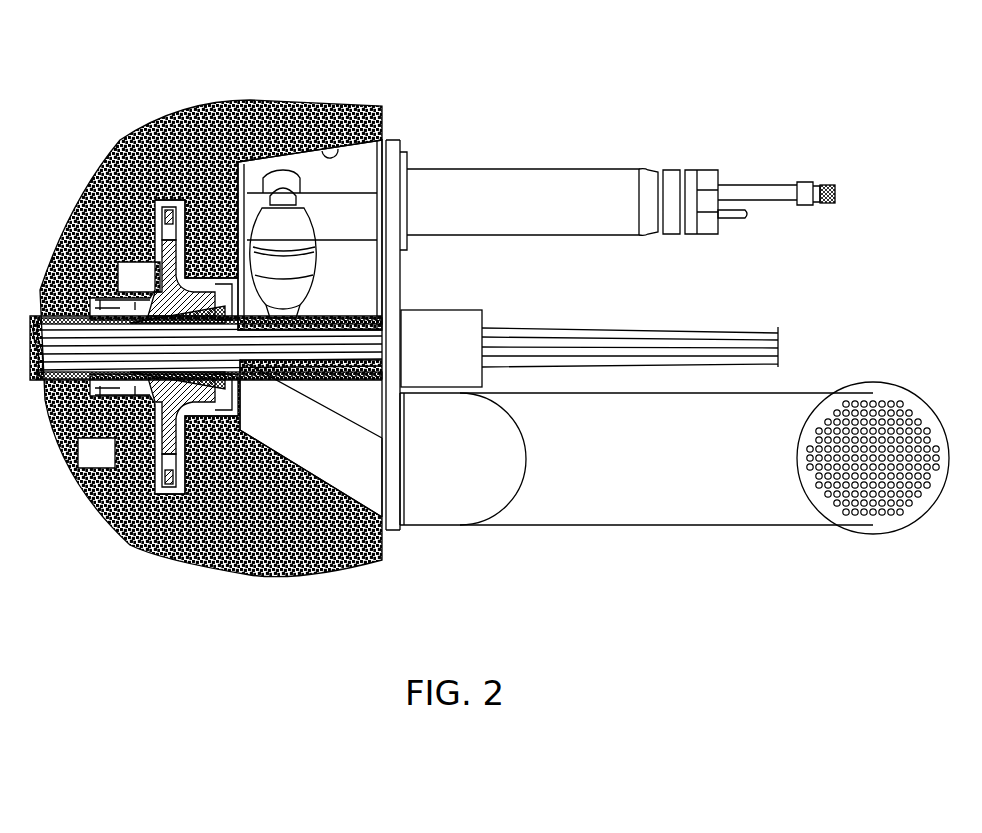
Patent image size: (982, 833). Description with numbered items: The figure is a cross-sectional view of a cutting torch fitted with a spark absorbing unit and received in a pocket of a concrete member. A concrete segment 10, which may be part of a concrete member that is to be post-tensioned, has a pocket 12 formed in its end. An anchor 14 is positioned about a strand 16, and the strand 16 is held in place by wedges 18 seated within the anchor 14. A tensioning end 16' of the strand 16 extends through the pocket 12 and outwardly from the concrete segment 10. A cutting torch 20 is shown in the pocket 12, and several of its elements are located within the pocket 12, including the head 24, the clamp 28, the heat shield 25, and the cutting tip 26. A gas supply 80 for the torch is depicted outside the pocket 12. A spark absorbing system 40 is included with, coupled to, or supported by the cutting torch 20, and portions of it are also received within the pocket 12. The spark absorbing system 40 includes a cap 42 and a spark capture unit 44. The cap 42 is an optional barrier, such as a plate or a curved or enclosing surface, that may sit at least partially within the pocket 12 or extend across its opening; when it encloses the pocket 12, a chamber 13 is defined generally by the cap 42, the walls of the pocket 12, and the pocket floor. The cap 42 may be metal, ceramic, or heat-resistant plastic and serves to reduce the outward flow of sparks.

The concrete segment 10 is at (109, 464).
The pocket 12 is at (345, 148).
The chamber 13 is at (386, 292).
The anchor 14 is at (140, 248).
The strand 16 is at (207, 353).
The tensioning end 16' is at (630, 326).
The wedges 18 is at (150, 315).
The cutting torch 20 is at (473, 121).
The head 24 is at (342, 226).
The heat shield 25 is at (308, 285).
The cutting tip 26 is at (290, 307).
The clamp 28 is at (243, 430).
The spark absorbing system 40 is at (498, 537).
The cap 42 is at (405, 303).
The spark capture unit 44 is at (652, 510).
The gas supply 80 is at (566, 182).